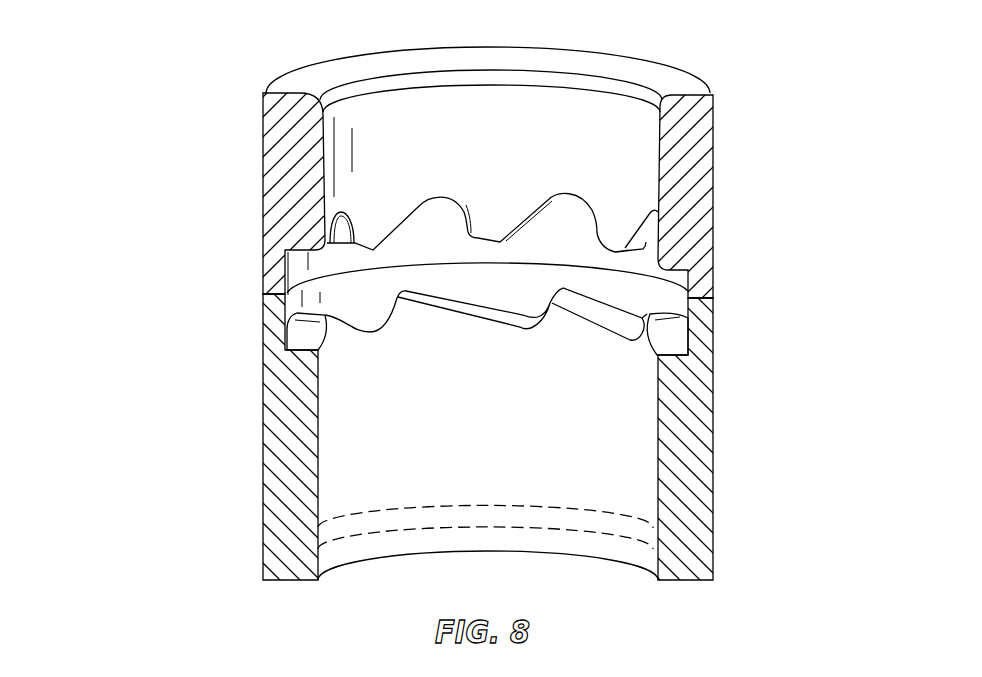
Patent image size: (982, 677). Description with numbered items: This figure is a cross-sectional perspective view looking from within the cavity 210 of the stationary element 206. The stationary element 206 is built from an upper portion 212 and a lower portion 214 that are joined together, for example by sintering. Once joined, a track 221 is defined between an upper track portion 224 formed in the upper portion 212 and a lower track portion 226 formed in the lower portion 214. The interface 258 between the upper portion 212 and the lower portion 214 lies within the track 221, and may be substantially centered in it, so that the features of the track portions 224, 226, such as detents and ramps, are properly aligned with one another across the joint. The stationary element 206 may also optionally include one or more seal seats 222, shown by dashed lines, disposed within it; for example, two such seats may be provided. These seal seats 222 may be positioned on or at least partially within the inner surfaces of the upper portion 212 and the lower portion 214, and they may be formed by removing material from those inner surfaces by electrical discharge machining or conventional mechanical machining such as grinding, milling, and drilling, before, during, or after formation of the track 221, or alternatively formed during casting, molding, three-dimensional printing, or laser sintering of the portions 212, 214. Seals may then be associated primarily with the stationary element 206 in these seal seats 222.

The stationary element 206 is at (152, 83).
The cavity 210 is at (578, 123).
The upper portion 212 is at (695, 150).
The lower portion 214 is at (693, 433).
The track 221 is at (347, 291).
The seal seats 222 is at (313, 542).
The upper track portion 224 is at (615, 220).
The lower track portion 226 is at (347, 405).
The interface 258 is at (712, 299).